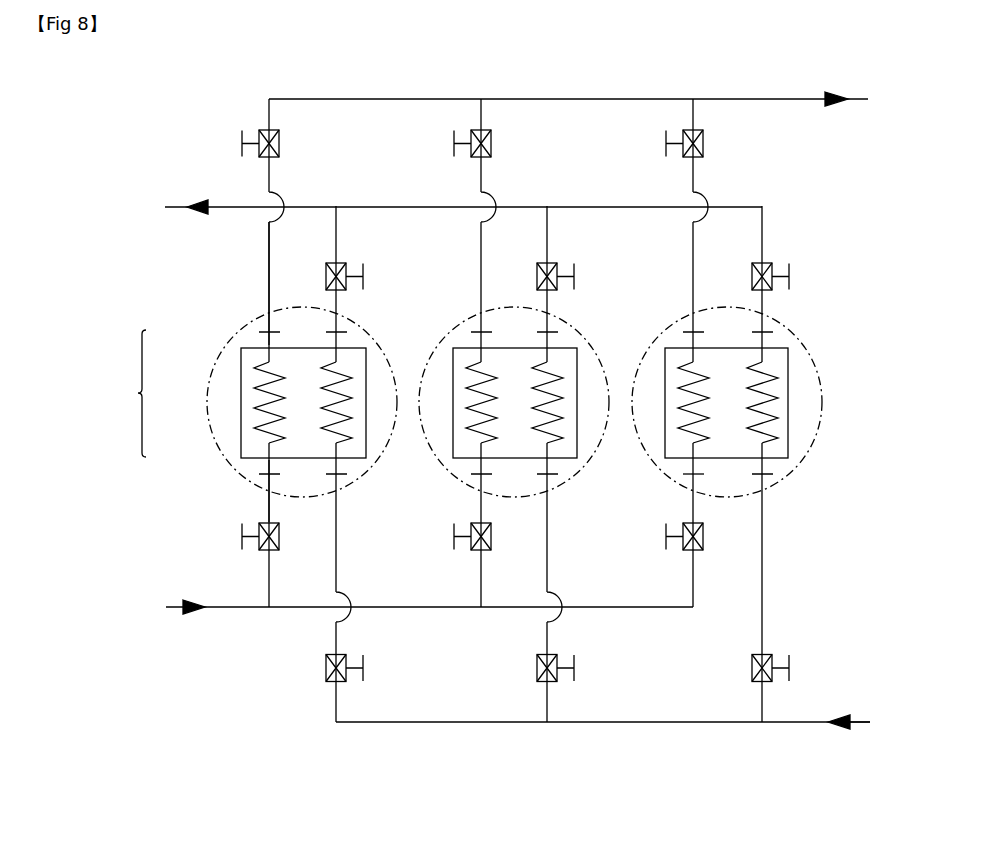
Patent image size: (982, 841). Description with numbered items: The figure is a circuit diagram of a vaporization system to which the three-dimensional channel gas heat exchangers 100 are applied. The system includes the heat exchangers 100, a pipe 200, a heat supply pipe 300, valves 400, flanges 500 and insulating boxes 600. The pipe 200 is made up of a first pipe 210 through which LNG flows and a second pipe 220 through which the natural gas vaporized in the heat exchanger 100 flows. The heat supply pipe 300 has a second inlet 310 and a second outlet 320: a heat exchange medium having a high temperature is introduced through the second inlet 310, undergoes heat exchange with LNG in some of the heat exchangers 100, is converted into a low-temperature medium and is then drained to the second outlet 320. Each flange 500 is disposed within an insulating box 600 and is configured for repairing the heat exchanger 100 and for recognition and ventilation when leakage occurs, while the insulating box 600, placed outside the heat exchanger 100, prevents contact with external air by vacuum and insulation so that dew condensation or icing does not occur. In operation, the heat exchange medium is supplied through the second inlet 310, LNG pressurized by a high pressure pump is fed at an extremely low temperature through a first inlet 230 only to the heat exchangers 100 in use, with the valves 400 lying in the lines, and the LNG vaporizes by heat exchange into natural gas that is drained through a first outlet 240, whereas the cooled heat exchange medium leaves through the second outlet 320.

The heat exchanger 100 is at (788, 380).
The pipe 200 is at (122, 393).
The first pipe 210 is at (268, 510).
The second pipe 220 is at (268, 276).
The first inlet 230 is at (172, 610).
The first outlet 240 is at (860, 96).
The heat supply pipe 300 is at (610, 724).
The second inlet 310 is at (858, 725).
The second outlet 320 is at (175, 203).
The valve 400 is at (683, 130).
The flange 500 is at (697, 476).
The insulating box 600 is at (822, 413).